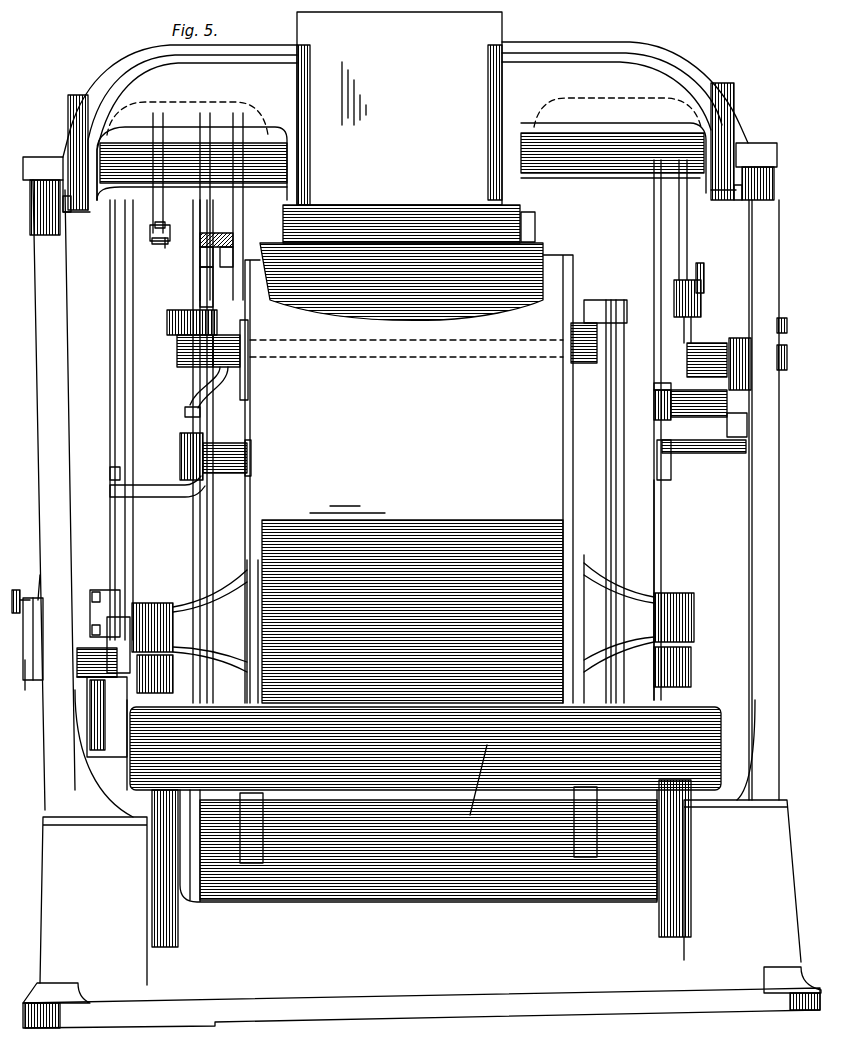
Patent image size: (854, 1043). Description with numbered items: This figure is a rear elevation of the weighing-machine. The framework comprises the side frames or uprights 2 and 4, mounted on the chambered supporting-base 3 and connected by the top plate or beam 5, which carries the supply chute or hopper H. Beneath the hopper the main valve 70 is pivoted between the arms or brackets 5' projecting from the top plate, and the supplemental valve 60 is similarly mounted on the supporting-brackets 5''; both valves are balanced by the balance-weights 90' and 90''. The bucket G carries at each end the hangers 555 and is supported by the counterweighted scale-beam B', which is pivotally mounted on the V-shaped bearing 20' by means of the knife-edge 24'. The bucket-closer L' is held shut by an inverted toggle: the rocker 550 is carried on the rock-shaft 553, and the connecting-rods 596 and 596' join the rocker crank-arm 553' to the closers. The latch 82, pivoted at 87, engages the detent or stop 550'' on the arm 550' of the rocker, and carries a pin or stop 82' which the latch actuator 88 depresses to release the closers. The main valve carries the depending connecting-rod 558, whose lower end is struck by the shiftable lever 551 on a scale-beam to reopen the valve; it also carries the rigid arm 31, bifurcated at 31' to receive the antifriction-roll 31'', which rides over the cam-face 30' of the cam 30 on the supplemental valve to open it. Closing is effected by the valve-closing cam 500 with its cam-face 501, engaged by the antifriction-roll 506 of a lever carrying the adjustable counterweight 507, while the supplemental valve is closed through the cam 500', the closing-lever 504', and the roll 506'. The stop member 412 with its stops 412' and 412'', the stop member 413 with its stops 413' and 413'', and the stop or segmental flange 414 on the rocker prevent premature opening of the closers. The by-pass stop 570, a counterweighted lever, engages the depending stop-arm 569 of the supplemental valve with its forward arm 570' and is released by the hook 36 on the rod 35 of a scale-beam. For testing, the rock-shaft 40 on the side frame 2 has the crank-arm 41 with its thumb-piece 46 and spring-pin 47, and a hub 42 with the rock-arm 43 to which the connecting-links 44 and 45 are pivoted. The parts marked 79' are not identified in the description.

The supply chute or hopper H is at (399, 108).
The bucket G is at (409, 479).
The scale-beam B' is at (469, 789).
The bucket-closer L' is at (418, 859).
The side frame or upright 2 is at (53, 395).
The chambered supporting-base 3 is at (68, 903).
The side frame or upright 4 is at (757, 488).
The top plate or beam 5 is at (55, 165).
The arms or brackets 5' is at (397, 216).
The supporting-brackets 5'' is at (413, 214).
The V-shaped bearing 20' is at (415, 750).
The pivot or knife-edge 24' is at (107, 728).
The cam 30 is at (172, 173).
The cam-face 30' is at (175, 215).
The rigid rearwardly-extending arm 31 is at (149, 222).
The bifurcation of arm 31' is at (152, 254).
The antifriction-roll 31'' is at (178, 257).
The upwardly-extending arm or rod 35 is at (660, 545).
The hook or bent-over portion 36 is at (648, 372).
The rock-shaft 40 is at (25, 675).
The crank-arm 41 is at (60, 640).
The hub 42 is at (90, 650).
The rock-arm 43 is at (108, 656).
The connecting-link 44 is at (110, 595).
The connecting-link 45 is at (100, 622).
The thumb-piece 46 is at (16, 590).
The spring-pin 47 is at (40, 575).
The supplemental valve 60 is at (415, 235).
The main valve 70 is at (365, 265).
The adjusting screw 79' is at (421, 863).
The latch 82 is at (199, 458).
The pin or stop 82' is at (144, 502).
The pivot 87 is at (180, 445).
The latch actuator or releaser device 88 is at (112, 477).
The balance-weight 90' is at (404, 101).
The balance-weight 90'' is at (401, 149).
The stop member 412 is at (273, 210).
The stop 412' is at (267, 352).
The stop 412'' is at (291, 226).
The stop member 413 is at (174, 287).
The segmental flange 413' is at (176, 321).
The stop 413'' is at (174, 271).
The stop or segmental flange 414 is at (238, 245).
The valve-closing cam 500 is at (648, 220).
The valve-closing cam 500' is at (635, 430).
The cam-face 501 is at (685, 322).
The closing-lever 504' is at (719, 390).
The antifriction-roll 506 is at (655, 298).
The cam-engaging roll 506' is at (657, 276).
The adjustable counterweight 507 is at (738, 440).
The rocker 550 is at (252, 346).
The arm 550' is at (243, 387).
The detent or stop 550'' is at (243, 401).
The counterpoise or shiftable lever 551 is at (147, 735).
The rock-shaft 553 is at (406, 361).
The rocker crank-arm 553' is at (177, 362).
The hangers 555 is at (672, 595).
The depending connecting-rod 558 is at (128, 452).
The depending stop-arm 569 is at (616, 352).
The by-pass stop 570 is at (621, 417).
The forward arm 570' is at (621, 405).
The connecting-rod 596 is at (254, 451).
The connecting-rod 596' is at (249, 451).